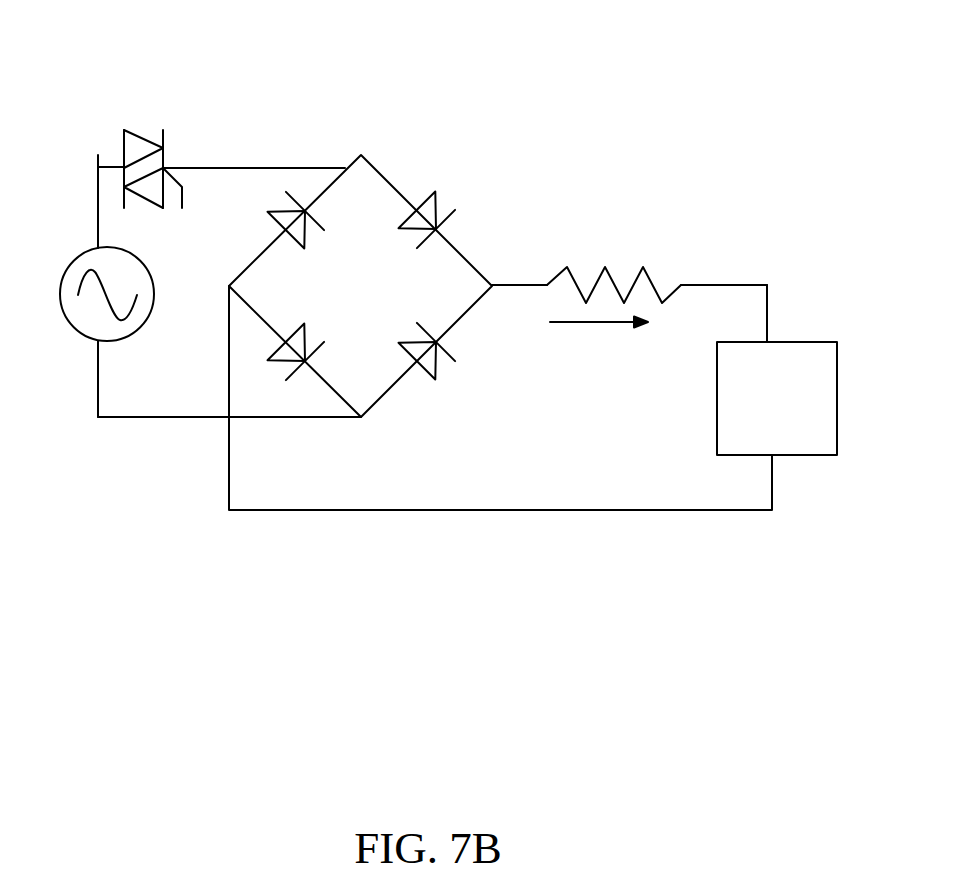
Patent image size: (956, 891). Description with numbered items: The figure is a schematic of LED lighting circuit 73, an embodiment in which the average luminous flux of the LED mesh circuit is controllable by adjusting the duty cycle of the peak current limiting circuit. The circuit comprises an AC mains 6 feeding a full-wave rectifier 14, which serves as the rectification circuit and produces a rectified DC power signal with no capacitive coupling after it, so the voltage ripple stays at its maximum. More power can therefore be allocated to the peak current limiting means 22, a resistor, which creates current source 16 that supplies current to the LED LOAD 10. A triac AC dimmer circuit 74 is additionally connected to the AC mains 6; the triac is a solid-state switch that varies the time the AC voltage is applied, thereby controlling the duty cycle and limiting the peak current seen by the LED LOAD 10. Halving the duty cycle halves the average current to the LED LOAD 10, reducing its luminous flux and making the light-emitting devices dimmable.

The triac AC dimmer circuit 74 is at (143, 128).
The AC mains 6 is at (78, 330).
The full-wave rectifier 14 is at (390, 178).
The peak current limiting means 22 is at (653, 273).
The current source 16 is at (599, 447).
The LED LOAD 10 is at (777, 467).
The LED lighting circuit 73 is at (331, 540).